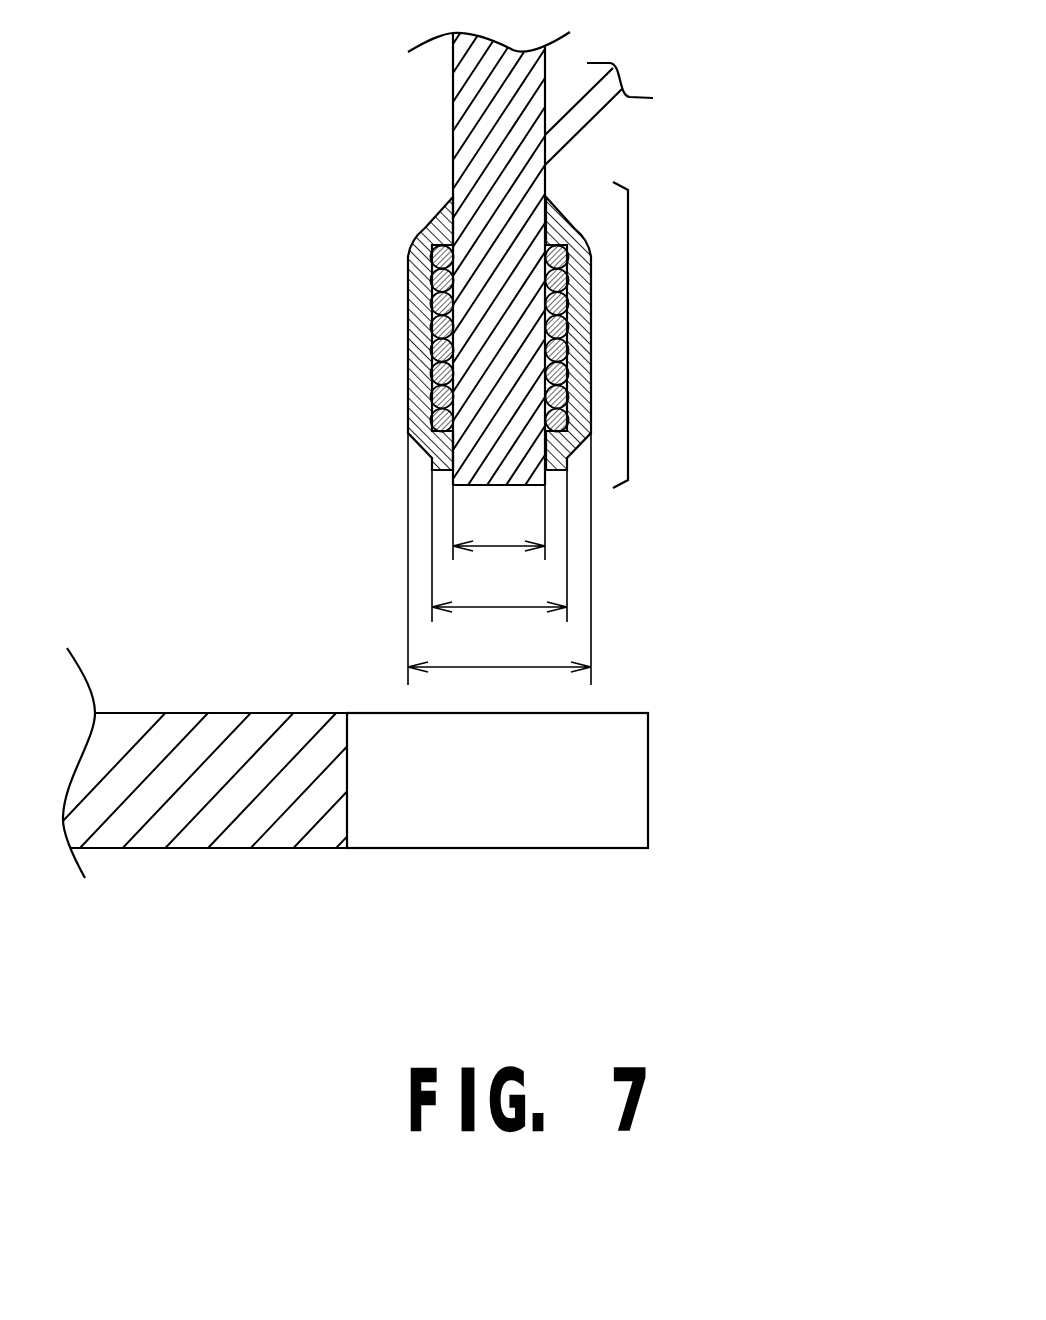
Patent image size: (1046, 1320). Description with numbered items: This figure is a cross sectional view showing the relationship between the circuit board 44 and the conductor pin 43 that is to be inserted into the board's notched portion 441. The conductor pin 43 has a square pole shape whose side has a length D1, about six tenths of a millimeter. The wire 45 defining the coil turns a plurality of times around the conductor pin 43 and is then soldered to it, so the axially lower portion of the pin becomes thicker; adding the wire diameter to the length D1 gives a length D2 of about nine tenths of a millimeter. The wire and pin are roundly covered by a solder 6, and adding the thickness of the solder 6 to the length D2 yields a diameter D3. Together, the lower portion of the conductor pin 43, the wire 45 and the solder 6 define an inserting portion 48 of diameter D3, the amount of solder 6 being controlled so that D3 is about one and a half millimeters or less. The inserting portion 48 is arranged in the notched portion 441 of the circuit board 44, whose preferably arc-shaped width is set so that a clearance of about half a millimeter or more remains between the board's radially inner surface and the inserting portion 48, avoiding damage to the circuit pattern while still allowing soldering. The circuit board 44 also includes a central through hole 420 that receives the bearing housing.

The conductor pin 43 is at (487, 192).
The wire 45 is at (424, 264).
The solder 6 is at (422, 358).
The inserting portion 48 is at (645, 335).
The length on a side of the conductor pin D1 is at (493, 529).
The length D2 is at (495, 593).
The diameter of the inserting portion D3 is at (505, 662).
The circuit board 44 is at (247, 757).
The notched portion 441 is at (560, 761).
The through hole 420 is at (735, 815).